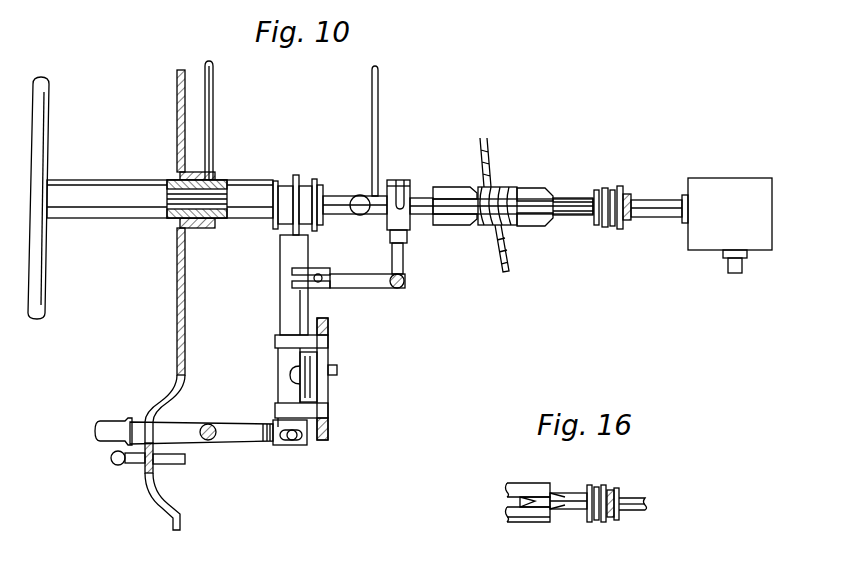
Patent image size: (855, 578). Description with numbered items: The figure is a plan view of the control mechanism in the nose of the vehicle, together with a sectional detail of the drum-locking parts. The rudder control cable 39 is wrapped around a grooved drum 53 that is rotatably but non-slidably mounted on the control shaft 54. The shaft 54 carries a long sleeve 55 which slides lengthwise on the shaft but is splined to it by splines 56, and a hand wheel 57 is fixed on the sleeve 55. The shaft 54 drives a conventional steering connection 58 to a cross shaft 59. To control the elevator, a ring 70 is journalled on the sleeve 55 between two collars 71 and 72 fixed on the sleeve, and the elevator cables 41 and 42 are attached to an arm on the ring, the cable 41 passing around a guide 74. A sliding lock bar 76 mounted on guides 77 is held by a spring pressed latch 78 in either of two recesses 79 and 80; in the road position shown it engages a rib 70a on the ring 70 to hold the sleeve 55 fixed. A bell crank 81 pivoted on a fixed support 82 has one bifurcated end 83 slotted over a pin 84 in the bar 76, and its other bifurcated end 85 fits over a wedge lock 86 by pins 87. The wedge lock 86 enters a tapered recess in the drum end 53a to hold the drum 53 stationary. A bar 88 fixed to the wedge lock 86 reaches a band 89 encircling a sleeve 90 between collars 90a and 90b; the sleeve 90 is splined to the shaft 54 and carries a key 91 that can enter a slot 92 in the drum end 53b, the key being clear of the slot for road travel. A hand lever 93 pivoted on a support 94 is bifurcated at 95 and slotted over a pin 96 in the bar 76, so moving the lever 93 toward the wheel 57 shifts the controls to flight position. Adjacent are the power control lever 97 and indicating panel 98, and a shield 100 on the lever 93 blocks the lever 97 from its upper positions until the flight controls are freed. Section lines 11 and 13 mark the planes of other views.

In FIG. 10, the section line 11- 11 is at (92, 305).
In FIG. 10, the section line 13- 13 is at (141, 386).
In FIG. 10, the control cable 39 is at (480, 140).
In FIG. 10, the elevator cable 41 is at (372, 100).
In FIG. 10, the elevator cable 42 is at (213, 88).
In FIG. 10, the grooved drum 53 is at (503, 187).
In FIG. 16, the grooved drum 53 is at (510, 518).
In FIG. 10, the drum end 53a is at (443, 187).
In FIG. 10, the drum end 53b is at (530, 187).
In FIG. 16, the drum end 53b is at (520, 486).
In FIG. 10, the control shaft 54 is at (664, 220).
In FIG. 16, the control shaft 54 is at (648, 505).
In FIG. 10, the sleeve 55 is at (98, 180).
In FIG. 10, the splines 56 is at (172, 182).
In FIG. 10, the hand wheel 57 is at (50, 122).
In FIG. 10, the steering connection 58 is at (701, 180).
In FIG. 10, the cross shaft 59 is at (742, 266).
In FIG. 10, the ring 70 is at (281, 184).
In FIG. 10, the rib 70a is at (294, 174).
In FIG. 10, the collar 71 is at (273, 181).
In FIG. 10, the collar 72 is at (313, 178).
In FIG. 10, the guide 74 is at (353, 196).
In FIG. 10, the sliding lock bar 76 is at (282, 260).
In FIG. 10, the guides 77 is at (277, 342).
In FIG. 10, the spring pressed latch 78 is at (312, 378).
In FIG. 10, the recess 79 is at (290, 366).
In FIG. 10, the recess 80 is at (300, 328).
In FIG. 10, the bell crank 81 is at (383, 289).
In FIG. 10, the fixed support 82 is at (405, 282).
In FIG. 10, the bell crank end 83 is at (323, 270).
In FIG. 10, the pin 84 is at (320, 283).
In FIG. 10, the bell crank end 85 is at (407, 229).
In FIG. 10, the wedge lock 86 is at (422, 188).
In FIG. 10, the pins 87 is at (400, 180).
In FIG. 10, the bar 88 is at (532, 217).
In FIG. 16, the bar 88 is at (613, 508).
In FIG. 10, the band 89 is at (603, 188).
In FIG. 16, the band 89 is at (604, 520).
In FIG. 10, the sleeve 90 is at (612, 226).
In FIG. 16, the sleeve 90 is at (596, 487).
In FIG. 10, the collar 90a is at (596, 190).
In FIG. 16, the collar 90a is at (590, 523).
In FIG. 10, the collar 90b is at (620, 186).
In FIG. 16, the collar 90b is at (619, 490).
In FIG. 10, the key 91 is at (594, 222).
In FIG. 16, the key 91 is at (567, 510).
In FIG. 16, the slot 92 is at (530, 503).
In FIG. 10, the hand lever 93 is at (120, 424).
In FIG. 10, the support 94 is at (207, 424).
In FIG. 10, the bifurcated end 95 is at (280, 446).
In FIG. 10, the pin 96 is at (300, 441).
In FIG. 10, the power control lever 97 is at (175, 466).
In FIG. 10, the indicating panel 98 is at (146, 480).
In FIG. 10, the shield 100 is at (112, 453).